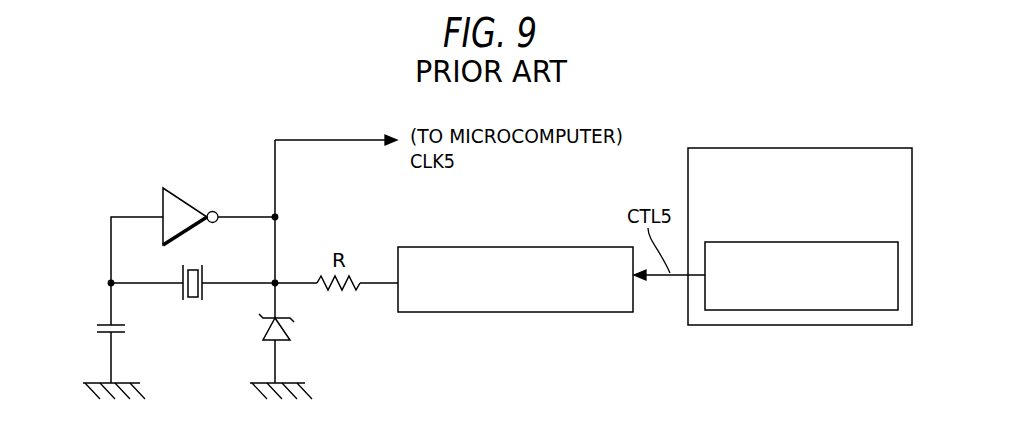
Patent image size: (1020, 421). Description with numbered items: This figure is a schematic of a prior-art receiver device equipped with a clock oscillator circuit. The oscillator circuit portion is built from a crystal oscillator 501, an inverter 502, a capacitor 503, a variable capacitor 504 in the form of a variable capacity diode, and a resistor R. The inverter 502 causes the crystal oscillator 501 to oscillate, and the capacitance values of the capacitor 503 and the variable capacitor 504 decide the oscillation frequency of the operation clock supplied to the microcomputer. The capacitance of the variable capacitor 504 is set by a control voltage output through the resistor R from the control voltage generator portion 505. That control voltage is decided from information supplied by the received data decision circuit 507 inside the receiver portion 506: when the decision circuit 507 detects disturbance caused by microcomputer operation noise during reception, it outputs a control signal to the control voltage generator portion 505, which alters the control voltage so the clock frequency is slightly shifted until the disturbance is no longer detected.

The crystal oscillator 501 is at (203, 272).
The inverter 502 is at (172, 190).
The capacitor 503 is at (102, 324).
The variable capacitor 504 is at (290, 333).
The control voltage generator portion 505 is at (518, 247).
The receiver portion 506 is at (800, 148).
The received data decision circuit 507 is at (800, 243).